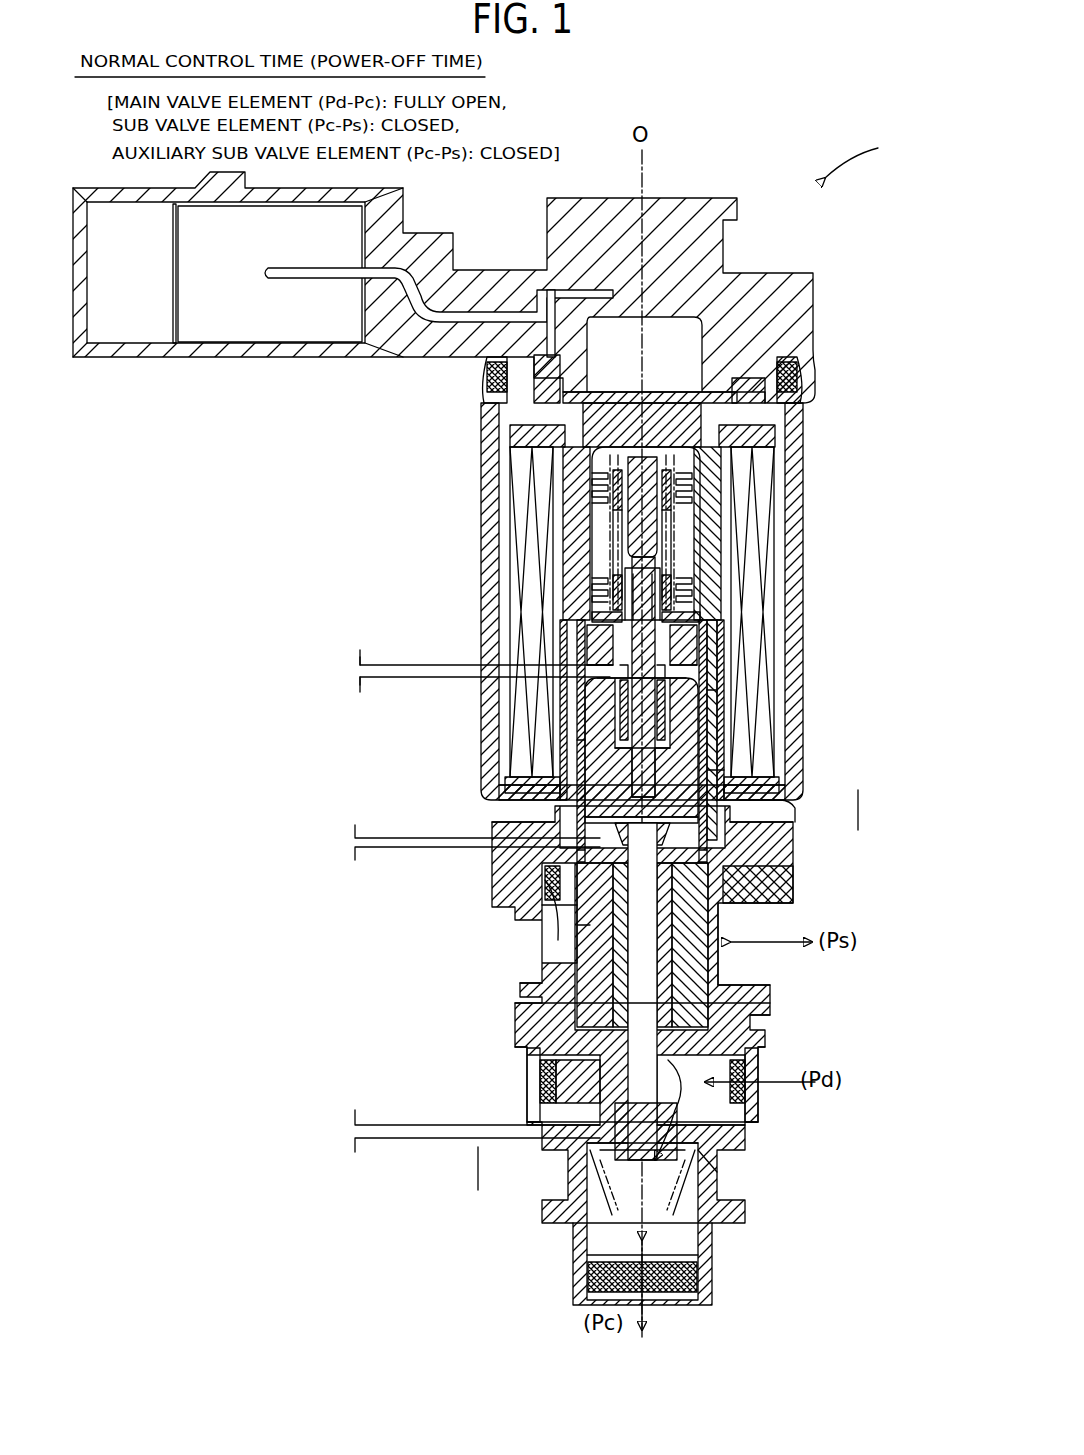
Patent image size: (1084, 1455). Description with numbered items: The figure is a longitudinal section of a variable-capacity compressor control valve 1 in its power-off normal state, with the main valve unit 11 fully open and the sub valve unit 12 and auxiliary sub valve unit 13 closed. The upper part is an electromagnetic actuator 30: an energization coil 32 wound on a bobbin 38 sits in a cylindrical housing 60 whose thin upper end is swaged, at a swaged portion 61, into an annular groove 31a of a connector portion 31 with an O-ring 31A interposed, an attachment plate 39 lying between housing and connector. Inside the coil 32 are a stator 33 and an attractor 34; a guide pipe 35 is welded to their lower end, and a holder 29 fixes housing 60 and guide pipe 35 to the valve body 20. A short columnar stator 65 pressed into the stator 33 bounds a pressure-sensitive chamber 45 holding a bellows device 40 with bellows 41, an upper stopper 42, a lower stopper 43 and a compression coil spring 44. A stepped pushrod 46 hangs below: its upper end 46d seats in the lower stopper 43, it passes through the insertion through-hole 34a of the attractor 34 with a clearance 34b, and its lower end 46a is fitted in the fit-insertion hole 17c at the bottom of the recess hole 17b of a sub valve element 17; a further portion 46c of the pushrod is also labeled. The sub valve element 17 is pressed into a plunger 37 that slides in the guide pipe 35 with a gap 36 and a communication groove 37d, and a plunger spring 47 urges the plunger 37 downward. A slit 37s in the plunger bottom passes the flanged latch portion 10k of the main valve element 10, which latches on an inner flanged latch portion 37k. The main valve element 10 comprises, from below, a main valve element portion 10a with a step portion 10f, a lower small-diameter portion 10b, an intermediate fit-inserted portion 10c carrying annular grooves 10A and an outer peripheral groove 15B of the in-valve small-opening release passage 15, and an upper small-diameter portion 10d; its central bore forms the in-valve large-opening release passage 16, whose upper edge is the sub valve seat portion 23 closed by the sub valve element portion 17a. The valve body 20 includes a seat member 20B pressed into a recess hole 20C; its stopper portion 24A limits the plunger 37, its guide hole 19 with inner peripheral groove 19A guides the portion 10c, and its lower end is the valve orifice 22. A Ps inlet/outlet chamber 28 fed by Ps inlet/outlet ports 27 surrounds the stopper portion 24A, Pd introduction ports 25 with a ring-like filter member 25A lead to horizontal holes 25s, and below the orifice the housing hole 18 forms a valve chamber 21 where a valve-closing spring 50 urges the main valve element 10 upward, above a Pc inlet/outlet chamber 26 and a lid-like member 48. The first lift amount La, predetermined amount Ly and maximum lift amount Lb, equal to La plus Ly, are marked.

The control valve 1 is at (900, 139).
The main valve element 10 is at (542, 966).
The annular grooves 10A is at (540, 1047).
The main valve element portion 10a is at (560, 1180).
The lower small-diameter portion 10b is at (540, 1095).
The intermediate fit-inserted portion 10c is at (542, 982).
The upper small-diameter portion 10d is at (780, 862).
The step portion 10f is at (590, 1195).
The flanged latch portion 10k is at (605, 818).
The main valve unit 11 is at (459, 1168).
The sub valve unit 12 is at (875, 810).
The auxiliary sub valve unit 13 is at (545, 906).
The in-valve small-opening release passage 15 is at (628, 945).
The outer peripheral groove 15B is at (710, 888).
The in-valve large-opening release passage 16 is at (600, 1000).
The sub valve element 17 is at (717, 742).
The sub valve element portion 17a is at (670, 828).
The recess hole 17b is at (717, 700).
The fit-insertion hole 17c is at (717, 772).
The housing hole 18 is at (700, 1170).
The guide hole 19 is at (545, 1078).
The inner peripheral groove 19A is at (545, 880).
The valve body 20 is at (770, 995).
The seat member 20B is at (560, 1025).
The recess hole 20C is at (735, 1016).
The valve chamber 21 is at (715, 1148).
The valve orifice 22 is at (545, 1158).
The sub valve seat portion 23 is at (790, 805).
The stopper portion 24A is at (577, 925).
The Pd introduction ports 25 is at (745, 1105).
The filter member 25A is at (750, 1062).
The horizontal holes 25s is at (745, 1041).
The Pc inlet/outlet chamber 26 is at (698, 1288).
The Ps inlet/outlet ports 27 is at (740, 965).
The Ps inlet/outlet chamber 28 is at (728, 920).
The holder 29 is at (545, 858).
The electromagnetic actuator 30 is at (812, 440).
The connector portion 31 is at (800, 318).
The O-ring 31A is at (492, 390).
The annular groove 31a is at (790, 378).
The energization coil 32 is at (525, 490).
The stator 33 is at (565, 518).
The attractor 34 is at (600, 658).
The insertion through-hole 34a is at (605, 614).
The clearance 34b is at (600, 690).
The guide pipe 35 is at (700, 668).
The gap 36 is at (563, 762).
The plunger 37 is at (578, 716).
The communication groove 37d is at (580, 740).
The inner flanged latch portion 37k is at (707, 840).
The slit 37s is at (577, 835).
The bobbin 38 is at (520, 432).
The attachment plate 39 is at (775, 398).
The bellows device 40 is at (760, 482).
The bellows 41 is at (698, 575).
The upper stopper 42 is at (700, 500).
The lower stopper 43 is at (700, 600).
The compression coil spring 44 is at (600, 545).
The pressure-sensitive chamber 45 is at (700, 525).
The pushrod 46 is at (705, 620).
The lower end 46a is at (600, 700).
The auxiliary element middle 46c is at (705, 645).
The upper end 46d is at (605, 580).
The plunger spring 47 is at (614, 632).
The lid-like member 48 is at (712, 1265).
The valve-closing spring 50 is at (690, 1195).
The housing 60 is at (520, 458).
The swaged portion 61 is at (487, 372).
The stator 65 is at (615, 403).
The maximum lift amount Lb is at (409, 676).
The predetermined amount Ly is at (464, 836).
The first lift amount La is at (464, 1127).